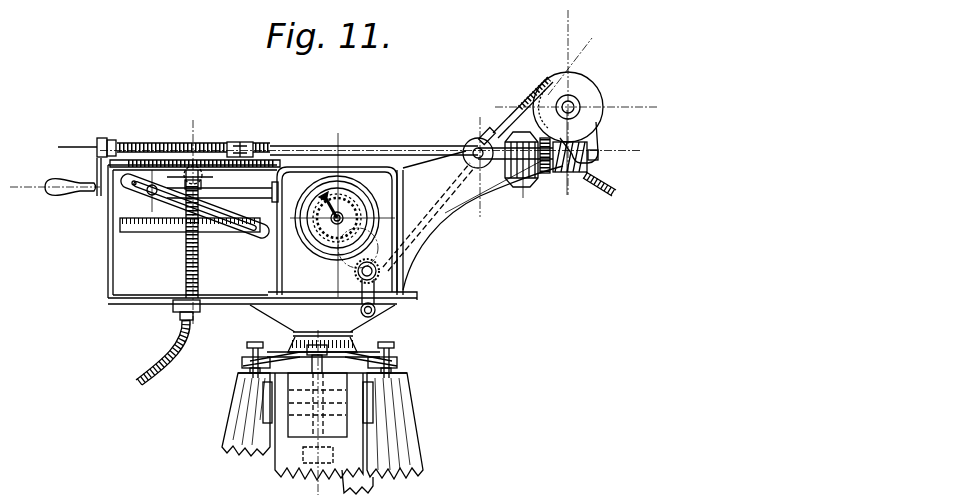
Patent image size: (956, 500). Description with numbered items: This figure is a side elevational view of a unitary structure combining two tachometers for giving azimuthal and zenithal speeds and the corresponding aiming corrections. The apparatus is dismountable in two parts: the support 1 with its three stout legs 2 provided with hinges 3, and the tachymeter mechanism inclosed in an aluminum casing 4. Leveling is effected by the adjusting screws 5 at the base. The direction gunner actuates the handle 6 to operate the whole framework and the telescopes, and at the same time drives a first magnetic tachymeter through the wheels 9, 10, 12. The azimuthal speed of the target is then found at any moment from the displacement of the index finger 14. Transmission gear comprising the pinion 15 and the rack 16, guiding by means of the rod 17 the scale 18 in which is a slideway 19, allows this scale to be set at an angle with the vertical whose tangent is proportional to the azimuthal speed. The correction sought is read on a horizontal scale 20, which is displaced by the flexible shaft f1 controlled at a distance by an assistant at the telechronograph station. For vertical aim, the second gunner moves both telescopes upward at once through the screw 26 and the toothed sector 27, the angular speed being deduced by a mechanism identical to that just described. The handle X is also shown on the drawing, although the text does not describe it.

The support 1 is at (300, 423).
The legs 2 is at (397, 413).
The hinges 3 is at (327, 423).
The aluminum casing 4 is at (262, 234).
The adjusting screws 5 is at (325, 349).
The handle 6 is at (376, 313).
The wheel 9 is at (383, 282).
The wheel 10 is at (358, 276).
The wheel 12 is at (330, 233).
The index finger 14 is at (334, 193).
The pinion 15 is at (320, 235).
The rack 16 is at (320, 204).
The rod 17 is at (150, 193).
The scale 18 is at (222, 194).
The slideway 19 is at (140, 178).
The horizontal scale 20 is at (143, 228).
The screw 26 is at (516, 97).
The toothed sector 27 is at (576, 102).
The handle X is at (67, 194).
The flexible shaft f1 is at (165, 352).